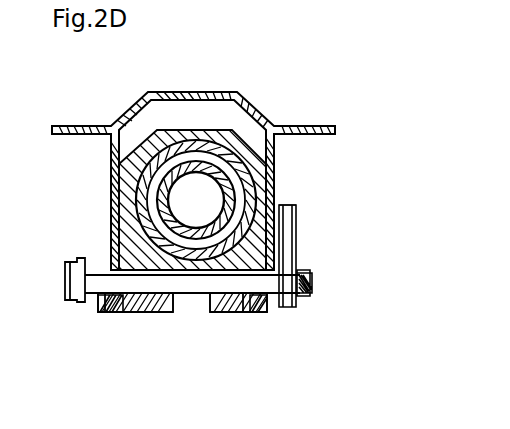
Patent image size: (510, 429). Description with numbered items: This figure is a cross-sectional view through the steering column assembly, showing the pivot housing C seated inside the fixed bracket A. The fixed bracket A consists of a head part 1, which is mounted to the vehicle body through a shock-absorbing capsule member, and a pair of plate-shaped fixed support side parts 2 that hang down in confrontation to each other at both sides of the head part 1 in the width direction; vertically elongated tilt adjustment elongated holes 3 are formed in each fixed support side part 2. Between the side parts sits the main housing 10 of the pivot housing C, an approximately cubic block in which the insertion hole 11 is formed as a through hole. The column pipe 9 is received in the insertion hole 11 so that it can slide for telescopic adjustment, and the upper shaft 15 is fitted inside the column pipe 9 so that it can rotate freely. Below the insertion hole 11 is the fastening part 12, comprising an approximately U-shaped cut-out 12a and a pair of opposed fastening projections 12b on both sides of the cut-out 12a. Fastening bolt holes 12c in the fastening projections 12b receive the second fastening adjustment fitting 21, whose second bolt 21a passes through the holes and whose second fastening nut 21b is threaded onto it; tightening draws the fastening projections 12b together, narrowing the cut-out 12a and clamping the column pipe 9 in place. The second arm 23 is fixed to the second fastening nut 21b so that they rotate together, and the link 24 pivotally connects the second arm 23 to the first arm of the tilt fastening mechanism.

The head part 1 is at (143, 94).
The fixed support side parts 2 is at (109, 152).
The tilt adjustment elongated holes 3 is at (122, 312).
The column pipe 9 is at (273, 175).
The main housing 10 is at (126, 138).
The insertion hole 11 is at (116, 217).
The fastening part 12 is at (253, 315).
The cut-out 12a is at (184, 296).
The fastening projections 12b is at (135, 296).
The fastening bolt holes 12c is at (130, 296).
The upper shaft 15 is at (141, 209).
The second fastening adjustment fitting 21 is at (64, 284).
The second bolt 21a is at (170, 277).
The second fastening nut 21b is at (300, 264).
The second arm 23 is at (287, 202).
The link 24 is at (297, 238).
The fixed bracket A is at (256, 104).
The pivot housing C is at (247, 139).